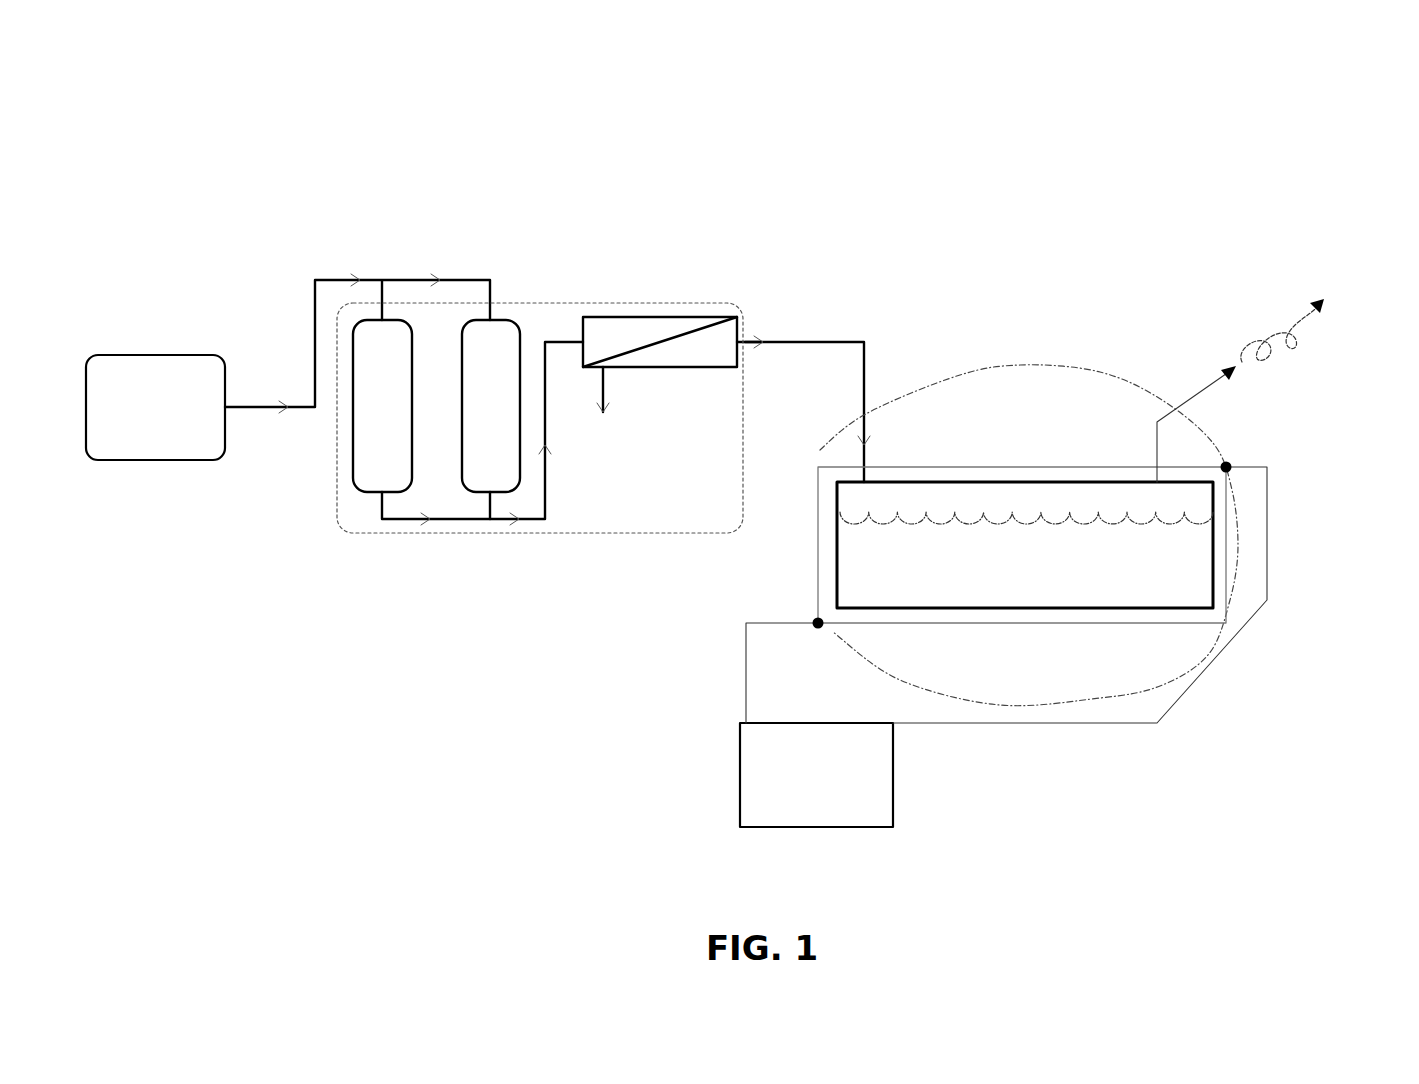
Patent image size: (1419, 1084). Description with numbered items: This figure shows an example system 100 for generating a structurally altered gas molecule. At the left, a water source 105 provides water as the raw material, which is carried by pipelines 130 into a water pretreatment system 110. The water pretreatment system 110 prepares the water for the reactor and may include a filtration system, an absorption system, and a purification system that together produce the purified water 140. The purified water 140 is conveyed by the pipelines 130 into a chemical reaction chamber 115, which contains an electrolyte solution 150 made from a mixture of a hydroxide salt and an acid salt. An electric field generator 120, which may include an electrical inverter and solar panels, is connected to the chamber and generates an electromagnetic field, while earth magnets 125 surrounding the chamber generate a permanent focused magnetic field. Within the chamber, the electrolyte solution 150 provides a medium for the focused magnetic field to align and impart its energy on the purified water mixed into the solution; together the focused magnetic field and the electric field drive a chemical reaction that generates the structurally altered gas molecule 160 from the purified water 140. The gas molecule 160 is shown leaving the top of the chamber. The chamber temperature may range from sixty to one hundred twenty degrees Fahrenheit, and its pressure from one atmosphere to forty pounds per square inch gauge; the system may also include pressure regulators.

The system 100 is at (1356, 95).
The water source 105 is at (155, 407).
The water pretreatment system 110 is at (538, 533).
The chemical reaction chamber 115 is at (1025, 480).
The electric field generator 120 is at (1003, 645).
The earth magnets 125 is at (1207, 432).
The pipelines 130 is at (864, 373).
The purified water 140 is at (792, 298).
The electrolyte solution 150 is at (1026, 556).
The structurally altered gas molecule 160 is at (1286, 332).